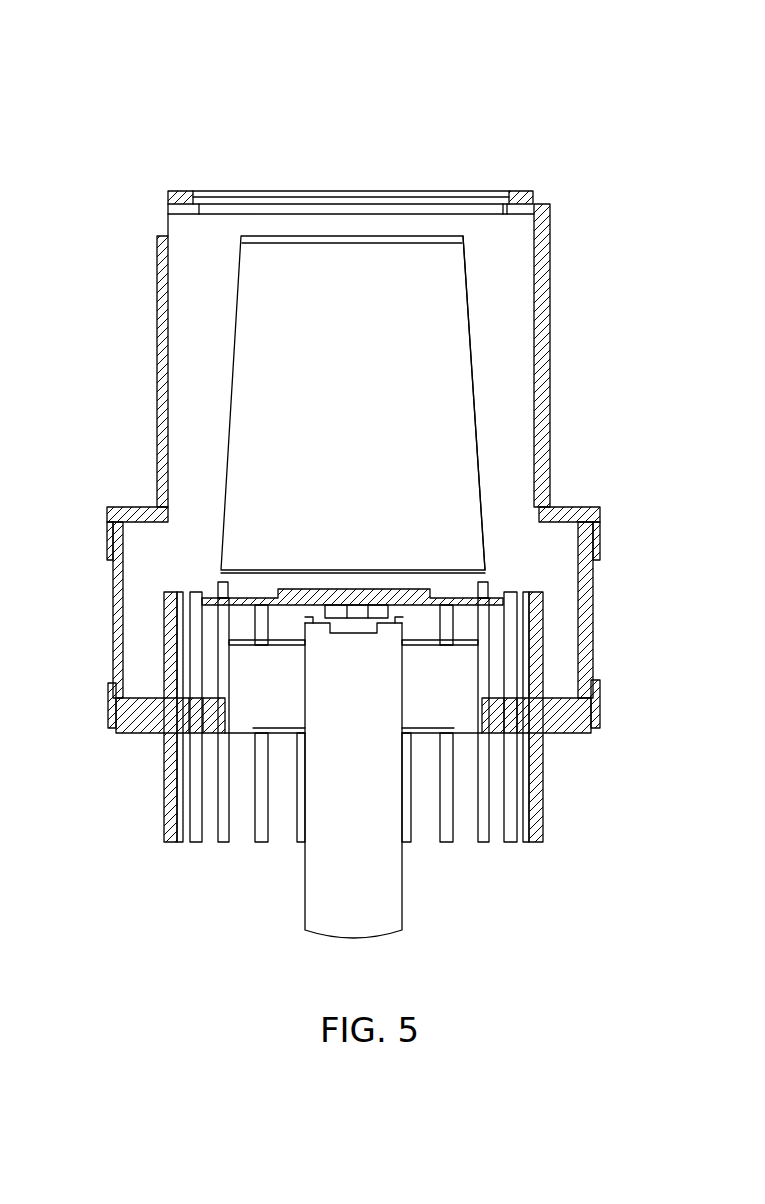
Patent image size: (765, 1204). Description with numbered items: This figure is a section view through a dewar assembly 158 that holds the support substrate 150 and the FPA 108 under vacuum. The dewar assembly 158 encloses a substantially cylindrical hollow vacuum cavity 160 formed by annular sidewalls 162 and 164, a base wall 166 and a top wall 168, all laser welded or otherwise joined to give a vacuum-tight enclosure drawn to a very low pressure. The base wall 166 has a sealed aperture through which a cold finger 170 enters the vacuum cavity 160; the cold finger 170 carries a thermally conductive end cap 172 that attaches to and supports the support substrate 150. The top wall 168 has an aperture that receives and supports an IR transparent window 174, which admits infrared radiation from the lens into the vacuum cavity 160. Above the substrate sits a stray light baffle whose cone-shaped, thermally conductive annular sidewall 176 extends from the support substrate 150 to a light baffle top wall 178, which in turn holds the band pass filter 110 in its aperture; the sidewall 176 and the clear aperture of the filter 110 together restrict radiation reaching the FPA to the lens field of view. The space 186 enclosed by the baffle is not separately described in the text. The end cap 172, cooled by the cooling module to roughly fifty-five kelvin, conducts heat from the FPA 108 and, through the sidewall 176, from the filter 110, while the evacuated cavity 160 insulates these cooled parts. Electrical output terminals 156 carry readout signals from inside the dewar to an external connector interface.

The dewar assembly 158 is at (100, 63).
The vacuum cavity 160 is at (508, 310).
The annular sidewall 162 is at (157, 297).
The annular sidewall 164 is at (112, 624).
The base wall 166 is at (127, 718).
The top wall 168 is at (182, 190).
The IR transparent window 174 is at (325, 191).
The light baffle top wall 178 is at (465, 240).
The band pass filter 110 is at (430, 238).
The annular sidewall 176 is at (475, 390).
The cup cavity 186 is at (278, 430).
The support substrate 150 is at (445, 604).
The FPA 108 is at (430, 588).
The end cap 172 is at (400, 620).
The cold finger 170 is at (367, 910).
The electrical output terminals 156 is at (258, 830).